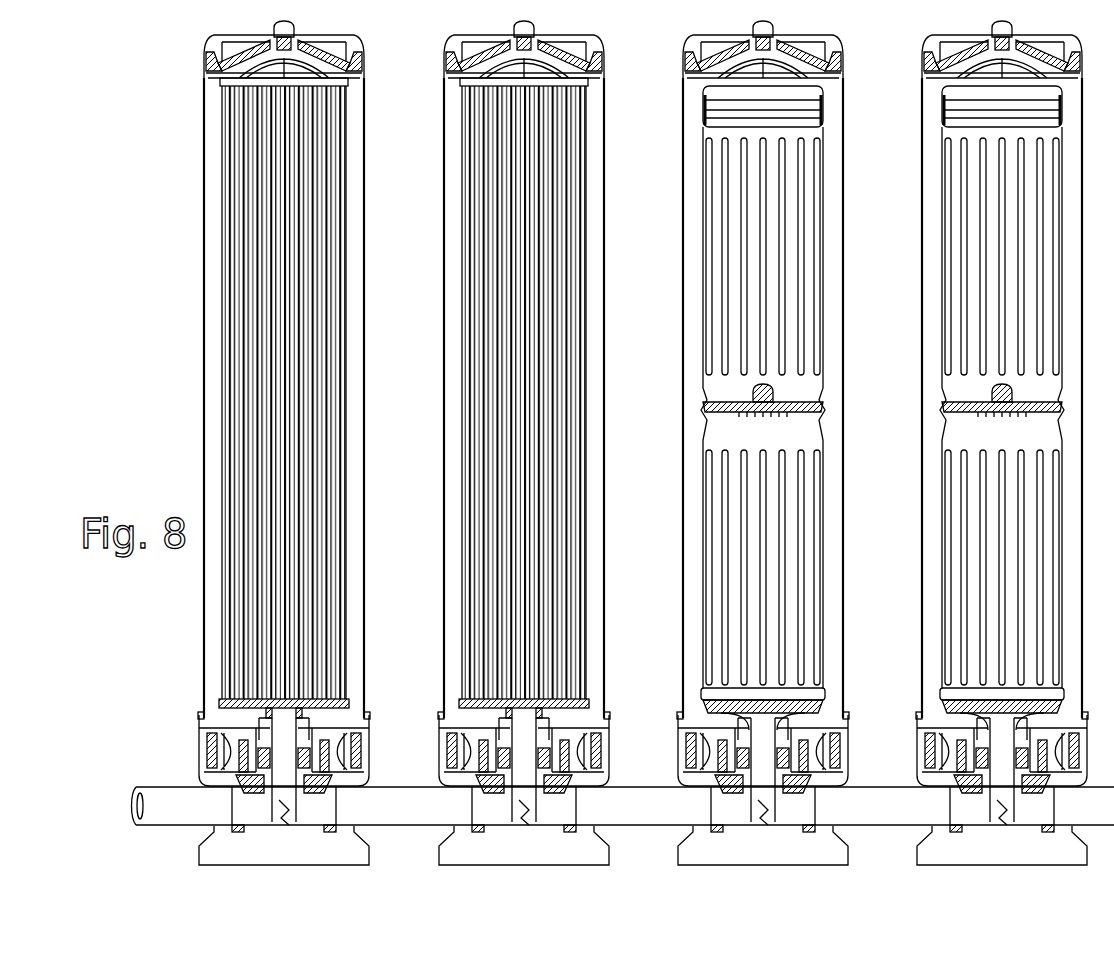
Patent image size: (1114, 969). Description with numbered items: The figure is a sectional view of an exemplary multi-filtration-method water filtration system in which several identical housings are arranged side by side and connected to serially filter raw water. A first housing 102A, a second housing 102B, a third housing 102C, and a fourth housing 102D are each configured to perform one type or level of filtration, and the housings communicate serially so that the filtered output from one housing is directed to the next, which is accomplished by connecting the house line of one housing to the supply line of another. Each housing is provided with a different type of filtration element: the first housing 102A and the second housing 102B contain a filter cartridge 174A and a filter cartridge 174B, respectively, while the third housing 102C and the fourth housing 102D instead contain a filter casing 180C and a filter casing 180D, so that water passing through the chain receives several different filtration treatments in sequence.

The first housing 102A is at (241, 443).
The second housing 102B is at (488, 443).
The third housing 102C is at (726, 443).
The fourth housing 102D is at (965, 443).
The filter cartridge 174A is at (247, 258).
The filter cartridge 174B is at (500, 265).
The filter casing 180C is at (735, 258).
The filter casing 180D is at (975, 243).